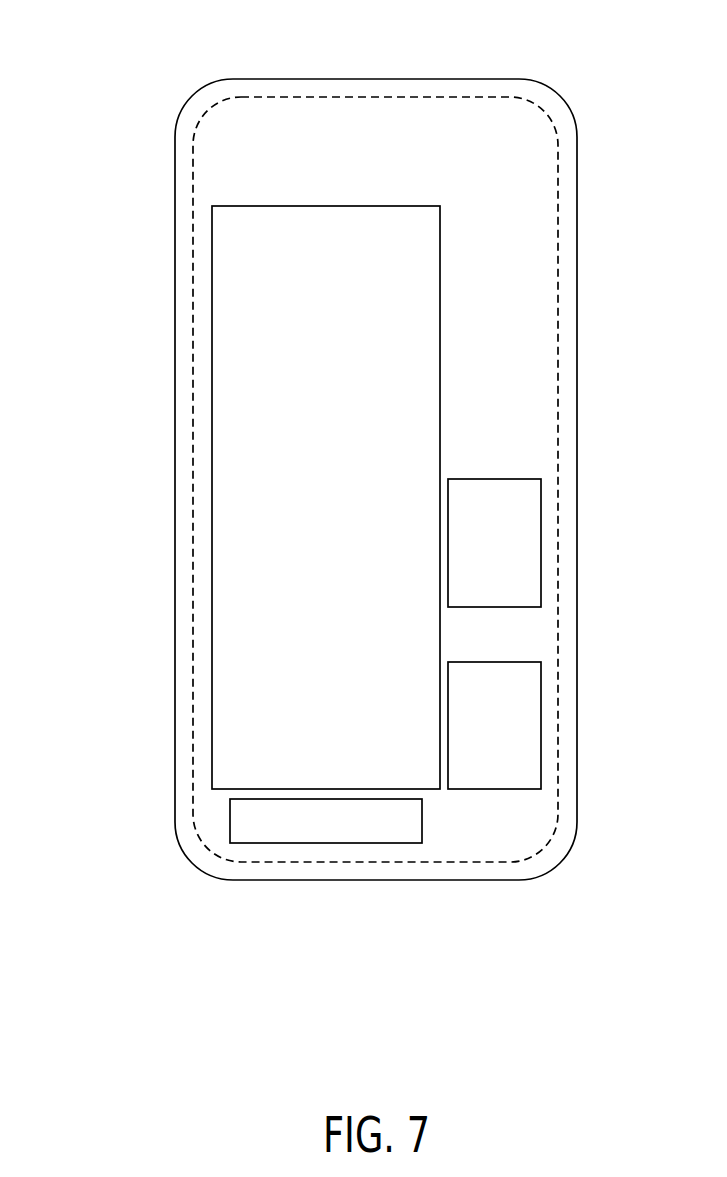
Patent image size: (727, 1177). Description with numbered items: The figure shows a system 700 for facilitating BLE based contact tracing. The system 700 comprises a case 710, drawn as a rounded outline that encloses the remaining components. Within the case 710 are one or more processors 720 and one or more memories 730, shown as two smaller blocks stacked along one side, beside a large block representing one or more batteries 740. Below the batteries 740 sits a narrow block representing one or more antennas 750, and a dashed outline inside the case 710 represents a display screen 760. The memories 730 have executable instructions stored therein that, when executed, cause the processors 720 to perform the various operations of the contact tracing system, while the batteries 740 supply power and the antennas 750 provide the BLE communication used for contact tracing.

The system 700 is at (65, 965).
The case 710 is at (264, 79).
The processors 720 is at (541, 535).
The memories 730 is at (541, 717).
The batteries 740 is at (208, 297).
The antennas 750 is at (322, 847).
The display screen 760 is at (484, 97).